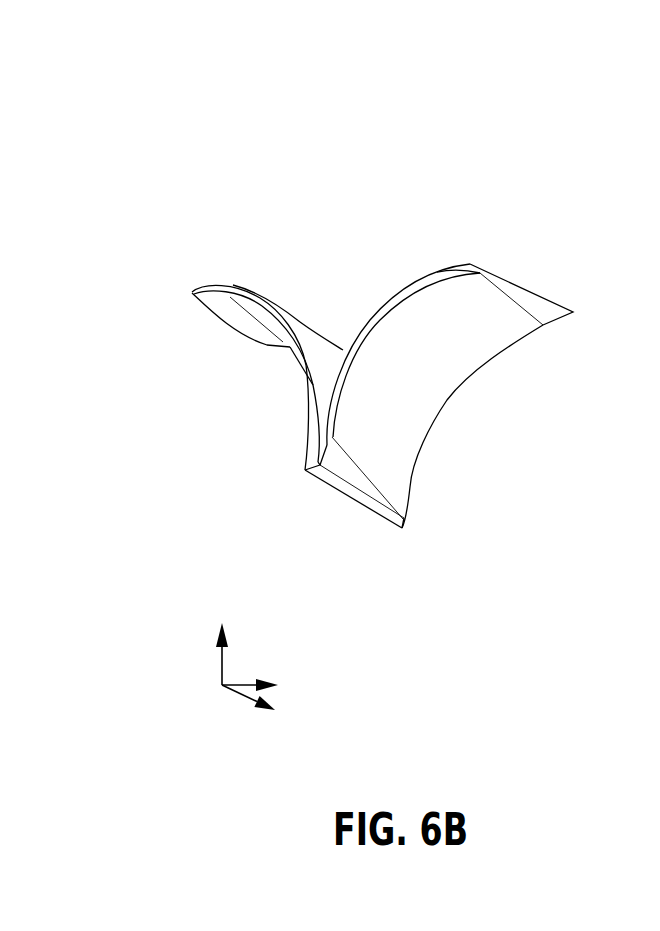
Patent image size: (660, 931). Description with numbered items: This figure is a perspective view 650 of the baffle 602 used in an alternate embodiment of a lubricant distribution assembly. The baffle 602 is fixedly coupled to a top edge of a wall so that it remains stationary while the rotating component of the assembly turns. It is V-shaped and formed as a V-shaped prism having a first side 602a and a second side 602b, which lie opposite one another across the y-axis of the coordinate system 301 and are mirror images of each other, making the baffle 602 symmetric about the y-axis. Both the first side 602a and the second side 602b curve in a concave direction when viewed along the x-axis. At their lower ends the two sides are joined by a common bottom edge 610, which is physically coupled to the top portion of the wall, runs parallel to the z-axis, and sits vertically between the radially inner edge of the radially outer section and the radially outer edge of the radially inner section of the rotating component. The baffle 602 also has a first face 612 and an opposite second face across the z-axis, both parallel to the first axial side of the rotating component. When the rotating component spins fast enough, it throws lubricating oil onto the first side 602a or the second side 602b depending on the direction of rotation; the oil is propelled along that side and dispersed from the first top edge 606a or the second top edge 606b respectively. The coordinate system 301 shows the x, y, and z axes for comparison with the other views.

The perspective view 650 is at (178, 82).
The baffle 602 is at (484, 254).
The first side 602a is at (305, 380).
The second side 602b is at (415, 410).
The first top edge 606a is at (194, 292).
The second top edge 606b is at (553, 294).
The common bottom edge 610 is at (358, 508).
The first face 612 is at (315, 462).
The coordinate system 301 is at (178, 599).